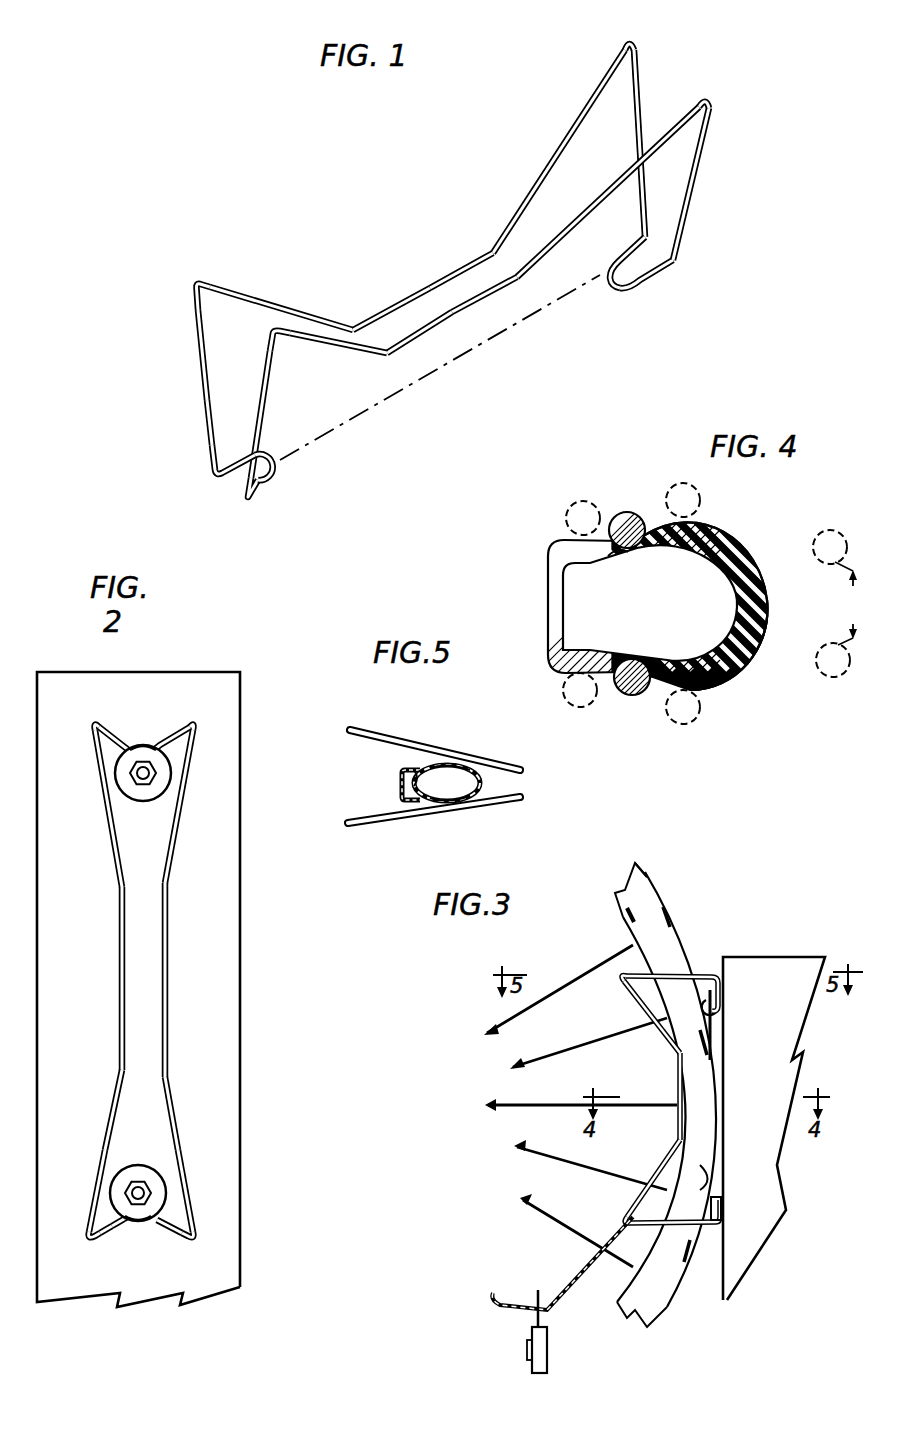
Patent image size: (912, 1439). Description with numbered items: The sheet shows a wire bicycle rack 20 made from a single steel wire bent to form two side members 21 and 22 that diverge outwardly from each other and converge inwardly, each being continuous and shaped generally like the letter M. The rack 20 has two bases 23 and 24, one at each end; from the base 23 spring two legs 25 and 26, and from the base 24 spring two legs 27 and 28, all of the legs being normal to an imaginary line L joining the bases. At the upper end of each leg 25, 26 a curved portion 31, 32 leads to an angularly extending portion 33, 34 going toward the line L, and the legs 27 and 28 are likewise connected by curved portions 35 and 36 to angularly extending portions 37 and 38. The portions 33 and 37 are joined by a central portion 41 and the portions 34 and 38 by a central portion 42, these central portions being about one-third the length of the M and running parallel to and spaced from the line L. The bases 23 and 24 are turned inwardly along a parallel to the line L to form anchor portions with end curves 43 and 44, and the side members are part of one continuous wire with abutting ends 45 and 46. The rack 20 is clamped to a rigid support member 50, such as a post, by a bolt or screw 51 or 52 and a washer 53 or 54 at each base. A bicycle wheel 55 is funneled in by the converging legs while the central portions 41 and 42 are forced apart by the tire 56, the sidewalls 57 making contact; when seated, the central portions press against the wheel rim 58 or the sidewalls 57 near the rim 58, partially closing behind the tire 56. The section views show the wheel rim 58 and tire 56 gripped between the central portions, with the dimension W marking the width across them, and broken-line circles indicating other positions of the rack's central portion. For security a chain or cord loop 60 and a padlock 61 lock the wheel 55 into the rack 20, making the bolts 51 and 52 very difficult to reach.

In FIG. 1, the bicycle rack 20 is at (318, 196).
In FIG. 1, the side member 21 is at (512, 216).
In FIG. 2, the side member 21 is at (112, 1115).
In FIG. 1, the side member 22 is at (538, 268).
In FIG. 2, the side member 22 is at (169, 1098).
In FIG. 1, the base 23 is at (282, 470).
In FIG. 1, the base 24 is at (630, 290).
In FIG. 1, the leg 25 is at (205, 402).
In FIG. 2, the leg 25 is at (100, 1240).
In FIG. 1, the leg 26 is at (264, 399).
In FIG. 2, the leg 26 is at (185, 1240).
In FIG. 3, the leg 26 is at (680, 1233).
In FIG. 1, the leg 27 is at (643, 72).
In FIG. 2, the leg 27 is at (109, 735).
In FIG. 5, the leg 27 is at (394, 823).
In FIG. 1, the leg 28 is at (698, 155).
In FIG. 2, the leg 28 is at (173, 737).
In FIG. 5, the leg 28 is at (362, 731).
In FIG. 3, the leg 28 is at (677, 974).
In FIG. 1, the curved portion 31 is at (200, 282).
In FIG. 2, the curved portion 31 is at (88, 1240).
In FIG. 1, the curved portion 32 is at (268, 333).
In FIG. 2, the curved portion 32 is at (190, 1240).
In FIG. 3, the curved portion 32 is at (627, 1222).
In FIG. 1, the angularly extending portion 33 is at (302, 313).
In FIG. 2, the angularly extending portion 33 is at (102, 1160).
In FIG. 1, the angularly extending portion 34 is at (330, 342).
In FIG. 2, the angularly extending portion 34 is at (181, 1160).
In FIG. 3, the angularly extending portion 34 is at (638, 1200).
In FIG. 1, the curved portion 35 is at (629, 36).
In FIG. 2, the curved portion 35 is at (92, 722).
In FIG. 1, the curved portion 36 is at (707, 102).
In FIG. 2, the curved portion 36 is at (194, 725).
In FIG. 3, the curved portion 36 is at (620, 985).
In FIG. 1, the angularly extending portion 37 is at (565, 140).
In FIG. 2, the angularly extending portion 37 is at (117, 868).
In FIG. 1, the angularly extending portion 38 is at (592, 206).
In FIG. 2, the angularly extending portion 38 is at (168, 866).
In FIG. 3, the angularly extending portion 38 is at (655, 1022).
In FIG. 1, the central portion 41 is at (425, 290).
In FIG. 2, the central portion 41 is at (117, 968).
In FIG. 4, the central portion 41 is at (618, 512).
In FIG. 1, the central portion 42 is at (418, 334).
In FIG. 2, the central portion 42 is at (170, 968).
In FIG. 4, the central portion 42 is at (625, 697).
In FIG. 3, the central portion 42 is at (677, 1133).
In FIG. 1, the end curve 43 is at (260, 443).
In FIG. 1, the end curve 44 is at (607, 275).
In FIG. 1, the abutting end 45 is at (208, 428).
In FIG. 2, the abutting end 45 is at (118, 1236).
In FIG. 1, the abutting end 46 is at (207, 432).
In FIG. 2, the abutting end 46 is at (140, 1245).
In FIG. 2, the support member 50 is at (240, 920).
In FIG. 3, the support member 50 is at (770, 958).
In FIG. 2, the bolt or screw 51 is at (150, 1195).
In FIG. 3, the bolt or screw 51 is at (723, 1200).
In FIG. 2, the bolt or screw 52 is at (150, 778).
In FIG. 3, the bolt or screw 52 is at (714, 1040).
In FIG. 2, the washer 53 is at (143, 1232).
In FIG. 3, the washer 53 is at (723, 1225).
In FIG. 2, the washer 54 is at (138, 752).
In FIG. 3, the washer 54 is at (724, 1018).
In FIG. 4, the bicycle wheel 55 is at (623, 557).
In FIG. 5, the bicycle wheel 55 is at (418, 765).
In FIG. 3, the bicycle wheel 55 is at (676, 1172).
In FIG. 4, the tire 56 is at (764, 590).
In FIG. 5, the tire 56 is at (480, 786).
In FIG. 3, the tire 56 is at (664, 910).
In FIG. 4, the tire sidewall 57 is at (763, 630).
In FIG. 5, the tire sidewall 57 is at (458, 766).
In FIG. 3, the tire sidewall 57 is at (647, 877).
In FIG. 4, the wheel rim 58 is at (548, 590).
In FIG. 5, the wheel rim 58 is at (402, 782).
In FIG. 3, the wheel rim 58 is at (622, 922).
In FIG. 3, the loop 60 is at (587, 1275).
In FIG. 3, the padlock 61 is at (548, 1345).
In FIG. 1, the imaginary line L is at (440, 367).
In FIG. 4, the cushion width W is at (858, 603).